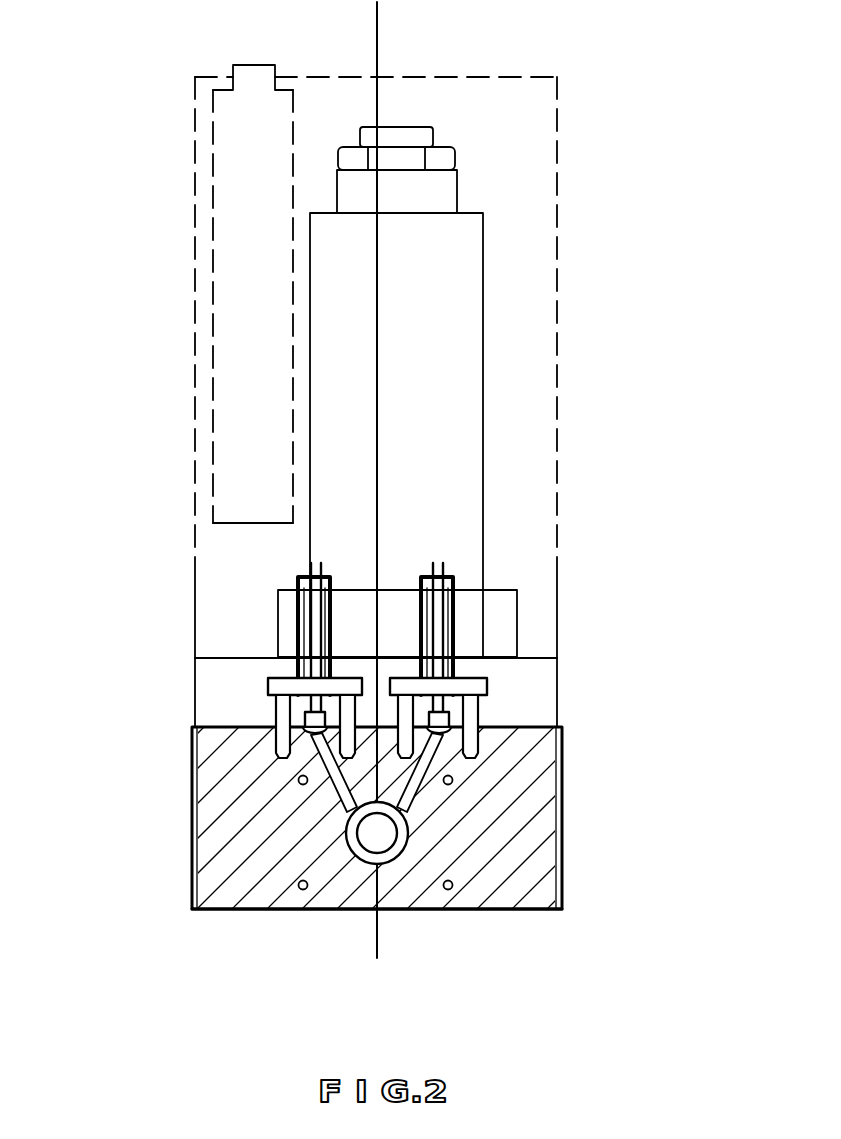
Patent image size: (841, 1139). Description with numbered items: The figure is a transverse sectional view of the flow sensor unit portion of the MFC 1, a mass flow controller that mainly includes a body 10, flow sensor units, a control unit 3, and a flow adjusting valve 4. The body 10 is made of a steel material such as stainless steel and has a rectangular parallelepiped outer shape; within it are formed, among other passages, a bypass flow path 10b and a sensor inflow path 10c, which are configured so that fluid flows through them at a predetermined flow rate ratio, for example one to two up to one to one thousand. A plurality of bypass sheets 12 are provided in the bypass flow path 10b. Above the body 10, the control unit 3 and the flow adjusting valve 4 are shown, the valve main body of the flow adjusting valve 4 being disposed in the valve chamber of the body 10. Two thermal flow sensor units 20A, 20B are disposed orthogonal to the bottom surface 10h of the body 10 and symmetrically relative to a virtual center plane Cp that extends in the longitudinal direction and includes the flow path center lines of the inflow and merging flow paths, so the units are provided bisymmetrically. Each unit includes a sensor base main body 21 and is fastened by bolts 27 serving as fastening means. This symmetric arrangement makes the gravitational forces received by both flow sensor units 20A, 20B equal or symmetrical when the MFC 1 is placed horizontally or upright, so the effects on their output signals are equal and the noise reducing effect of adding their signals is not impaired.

The MFC 1 is at (625, 146).
The virtual center plane Cp is at (380, 50).
The control unit 3 is at (225, 192).
The flow adjusting valve 4 is at (489, 381).
The flow sensor unit 20A is at (472, 624).
The flow sensor unit 20B is at (290, 622).
The bolts 27 is at (283, 687).
The sensor base main body 21 is at (307, 717).
The body 10 is at (510, 895).
The bypass flow path 10b is at (368, 860).
The sensor inflow path 10c is at (325, 785).
The bottom surface 10h is at (230, 911).
The bypass sheets 12 is at (384, 842).